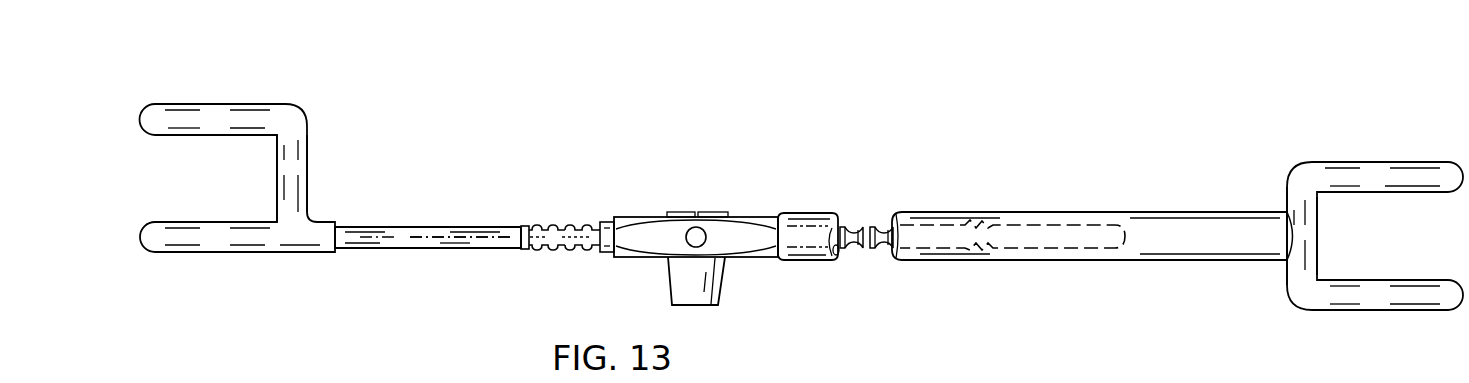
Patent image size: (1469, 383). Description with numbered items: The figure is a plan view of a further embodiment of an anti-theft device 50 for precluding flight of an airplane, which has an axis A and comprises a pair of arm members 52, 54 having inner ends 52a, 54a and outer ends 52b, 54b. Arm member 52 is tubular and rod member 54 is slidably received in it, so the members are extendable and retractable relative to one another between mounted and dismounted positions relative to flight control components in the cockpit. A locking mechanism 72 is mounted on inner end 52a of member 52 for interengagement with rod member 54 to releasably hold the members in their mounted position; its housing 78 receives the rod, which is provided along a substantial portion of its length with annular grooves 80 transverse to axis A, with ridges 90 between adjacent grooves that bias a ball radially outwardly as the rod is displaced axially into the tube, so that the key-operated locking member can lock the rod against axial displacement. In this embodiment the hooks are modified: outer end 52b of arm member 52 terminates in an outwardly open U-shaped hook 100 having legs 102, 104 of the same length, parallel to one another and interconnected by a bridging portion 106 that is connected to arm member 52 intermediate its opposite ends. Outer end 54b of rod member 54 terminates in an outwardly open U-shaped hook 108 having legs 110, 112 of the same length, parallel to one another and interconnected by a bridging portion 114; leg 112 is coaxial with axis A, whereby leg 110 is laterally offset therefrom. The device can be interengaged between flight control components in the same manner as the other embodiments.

The anti-theft device 50 is at (939, 126).
The arm member 52 is at (1094, 202).
The inner end of arm member 52a is at (800, 213).
The outer end of arm member 52b is at (1258, 250).
The rod member 54 is at (457, 214).
The inner end of rod member 54a is at (1102, 250).
The outer end of rod member 54b is at (357, 242).
The locking mechanism 72 is at (740, 280).
The housing 78 is at (648, 232).
The annular grooves 80 is at (538, 227).
The ridges 90 is at (565, 227).
The U-shaped hook 100 is at (1338, 152).
The leg of hook 100 102 is at (1388, 170).
The leg of hook 100 104 is at (1396, 298).
The bridging portion 106 is at (1298, 202).
The U-shaped hook 108 is at (315, 115).
The leg of hook 108 110 is at (220, 112).
The leg of hook 108 112 is at (212, 240).
The bridging portion 114 is at (297, 190).
The axis A is at (475, 238).